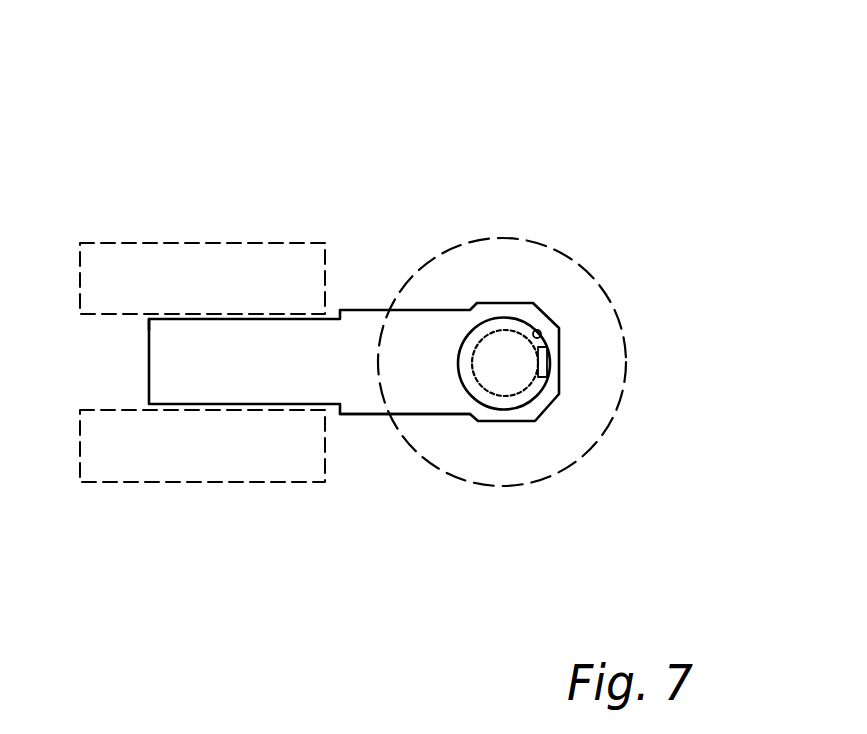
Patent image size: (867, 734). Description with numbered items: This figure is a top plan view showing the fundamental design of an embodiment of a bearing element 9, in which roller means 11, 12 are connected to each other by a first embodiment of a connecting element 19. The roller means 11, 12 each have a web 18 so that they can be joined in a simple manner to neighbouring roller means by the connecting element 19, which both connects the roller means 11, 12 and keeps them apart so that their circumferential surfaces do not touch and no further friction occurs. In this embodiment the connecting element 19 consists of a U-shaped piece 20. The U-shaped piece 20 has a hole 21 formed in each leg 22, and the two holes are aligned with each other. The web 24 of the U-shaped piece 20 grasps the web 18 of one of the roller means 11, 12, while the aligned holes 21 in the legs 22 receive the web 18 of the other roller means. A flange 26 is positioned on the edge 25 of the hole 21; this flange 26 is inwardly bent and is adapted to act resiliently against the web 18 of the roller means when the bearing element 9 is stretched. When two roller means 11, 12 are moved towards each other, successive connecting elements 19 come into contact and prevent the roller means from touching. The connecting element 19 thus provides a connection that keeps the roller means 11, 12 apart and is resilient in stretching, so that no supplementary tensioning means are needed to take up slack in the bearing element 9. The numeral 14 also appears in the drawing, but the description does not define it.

The bearing element 9 is at (234, 117).
The roller means 11 is at (157, 272).
The roller means 12 is at (522, 250).
The contact surface 14 is at (624, 344).
The web 18 is at (200, 409).
The connecting element 19 is at (368, 291).
The U-shaped piece 20 is at (367, 343).
The hole 21 is at (517, 398).
The leg 22 is at (382, 395).
The web 24 is at (162, 319).
The edge 25 is at (540, 331).
The flange 26 is at (547, 362).